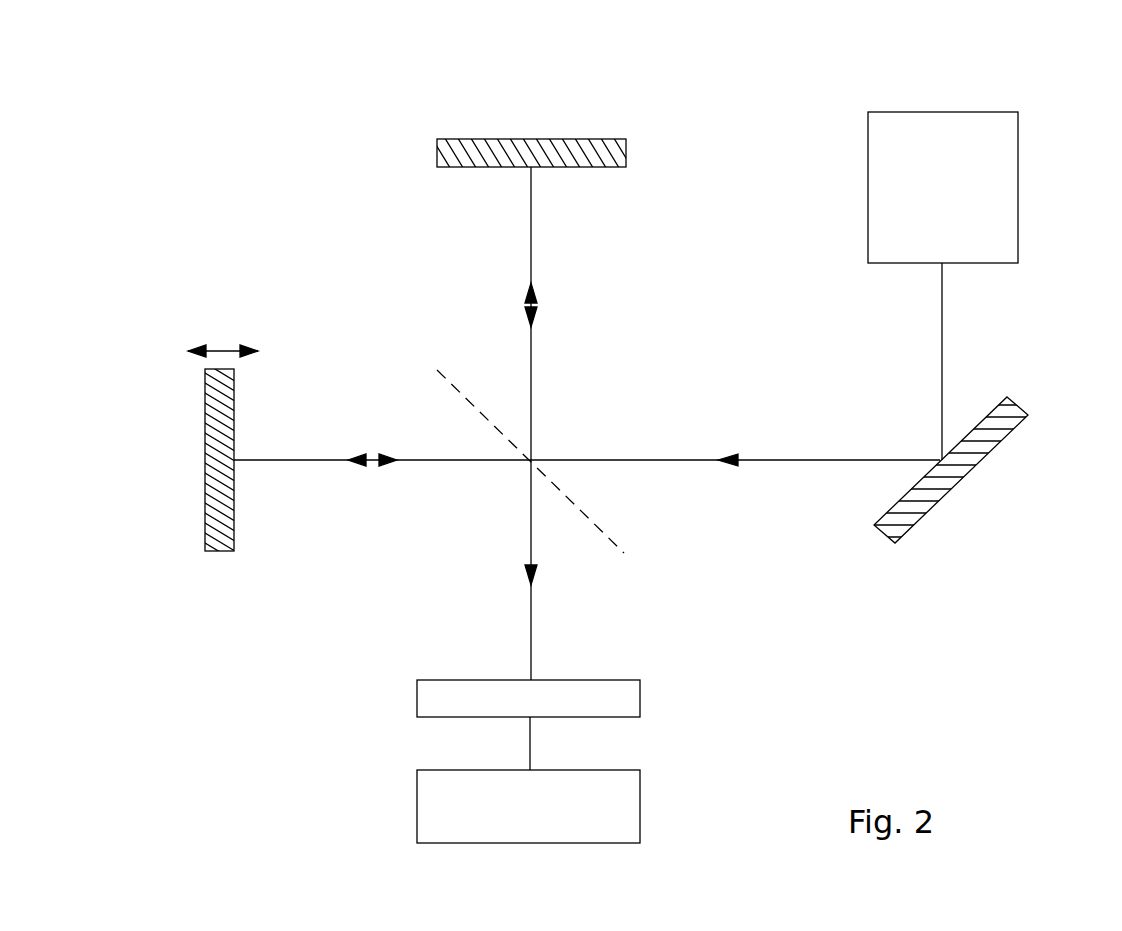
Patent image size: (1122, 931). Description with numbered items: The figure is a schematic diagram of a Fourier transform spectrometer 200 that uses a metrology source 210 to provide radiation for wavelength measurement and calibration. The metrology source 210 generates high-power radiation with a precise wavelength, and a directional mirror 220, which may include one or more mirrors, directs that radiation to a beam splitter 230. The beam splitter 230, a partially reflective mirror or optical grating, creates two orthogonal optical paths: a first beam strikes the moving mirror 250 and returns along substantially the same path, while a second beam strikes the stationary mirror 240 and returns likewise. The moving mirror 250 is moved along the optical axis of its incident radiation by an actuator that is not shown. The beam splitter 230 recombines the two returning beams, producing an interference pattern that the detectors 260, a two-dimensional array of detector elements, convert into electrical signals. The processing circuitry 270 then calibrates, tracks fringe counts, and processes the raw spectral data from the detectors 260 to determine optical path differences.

The Fourier transform spectrometer 200 is at (240, 158).
The metrology source 210 is at (940, 112).
The directional mirror 220 is at (1010, 397).
The beam splitter 230 is at (438, 372).
The stationary mirror 240 is at (532, 140).
The moving mirror 250 is at (225, 552).
The detectors 260 is at (417, 703).
The processing circuitry 270 is at (417, 805).